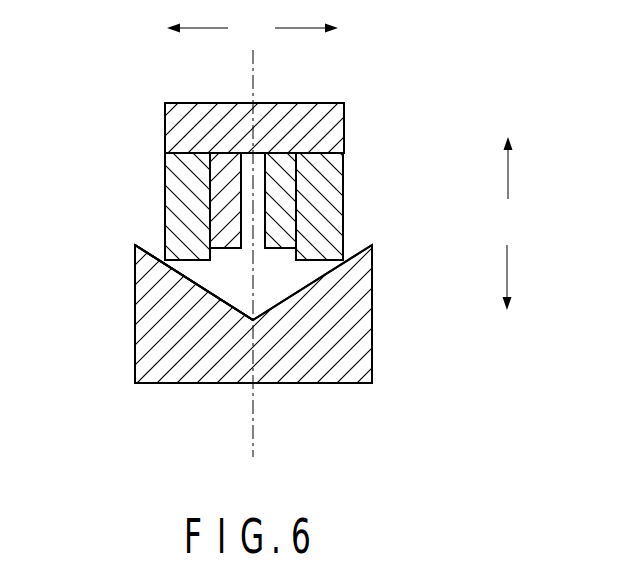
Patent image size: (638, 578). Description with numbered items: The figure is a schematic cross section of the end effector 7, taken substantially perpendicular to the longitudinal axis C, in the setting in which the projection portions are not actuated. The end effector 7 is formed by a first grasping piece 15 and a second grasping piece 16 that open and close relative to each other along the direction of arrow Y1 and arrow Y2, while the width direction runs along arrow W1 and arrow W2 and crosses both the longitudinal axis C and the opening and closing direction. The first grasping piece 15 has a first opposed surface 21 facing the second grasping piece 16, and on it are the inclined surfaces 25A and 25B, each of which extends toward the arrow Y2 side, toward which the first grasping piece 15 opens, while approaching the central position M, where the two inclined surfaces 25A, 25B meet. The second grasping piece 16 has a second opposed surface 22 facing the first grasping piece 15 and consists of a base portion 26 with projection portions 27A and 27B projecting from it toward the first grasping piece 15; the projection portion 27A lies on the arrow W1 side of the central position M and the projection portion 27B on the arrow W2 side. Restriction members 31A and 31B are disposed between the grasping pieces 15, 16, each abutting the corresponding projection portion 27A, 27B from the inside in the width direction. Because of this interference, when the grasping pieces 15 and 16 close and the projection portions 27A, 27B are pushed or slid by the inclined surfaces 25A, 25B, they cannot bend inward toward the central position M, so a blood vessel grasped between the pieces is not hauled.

The end effector 7 is at (431, 87).
The first grasping piece 15 is at (385, 353).
The second grasping piece 16 is at (355, 140).
The first opposed surface 21 is at (226, 285).
The second opposed surface 22 is at (200, 283).
The inclined surface 25A is at (141, 262).
The inclined surface 25B is at (356, 248).
The base portion 26 is at (206, 118).
The projection portion 27A is at (175, 192).
The projection portion 27B is at (345, 174).
The restriction member 31A is at (217, 182).
The restriction member 31B is at (345, 135).
The longitudinal axis C is at (253, 253).
The central position M is at (256, 72).
The arrow W1 is at (200, 16).
The arrow W2 is at (306, 16).
The arrow Y1 is at (523, 168).
The arrow Y2 is at (523, 277).